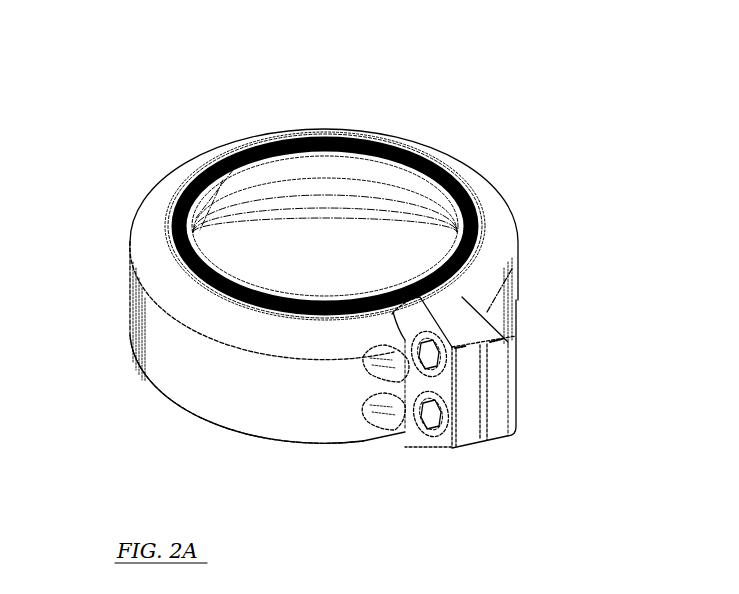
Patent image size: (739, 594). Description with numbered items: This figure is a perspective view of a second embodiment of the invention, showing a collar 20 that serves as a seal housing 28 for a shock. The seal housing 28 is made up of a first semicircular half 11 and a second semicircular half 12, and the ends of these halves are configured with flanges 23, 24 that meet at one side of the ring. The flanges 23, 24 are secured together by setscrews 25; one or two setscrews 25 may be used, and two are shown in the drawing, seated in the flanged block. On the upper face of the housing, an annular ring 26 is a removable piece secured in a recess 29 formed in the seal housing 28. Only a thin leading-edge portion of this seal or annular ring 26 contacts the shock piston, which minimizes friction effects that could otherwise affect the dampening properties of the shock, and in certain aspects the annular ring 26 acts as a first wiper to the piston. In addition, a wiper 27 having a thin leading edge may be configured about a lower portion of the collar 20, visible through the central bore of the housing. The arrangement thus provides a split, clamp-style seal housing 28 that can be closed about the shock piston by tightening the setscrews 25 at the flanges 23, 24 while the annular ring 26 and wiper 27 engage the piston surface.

The collar 20 is at (153, 160).
The first semicircular half 11 is at (493, 208).
The second semicircular half 12 is at (163, 282).
The flange 23 is at (502, 344).
The flange 24 is at (446, 450).
The setscrew 25 is at (418, 424).
The annular ring 26 is at (436, 168).
The wiper 27 is at (298, 212).
The seal housing 28 is at (164, 368).
The recess 29 is at (183, 232).